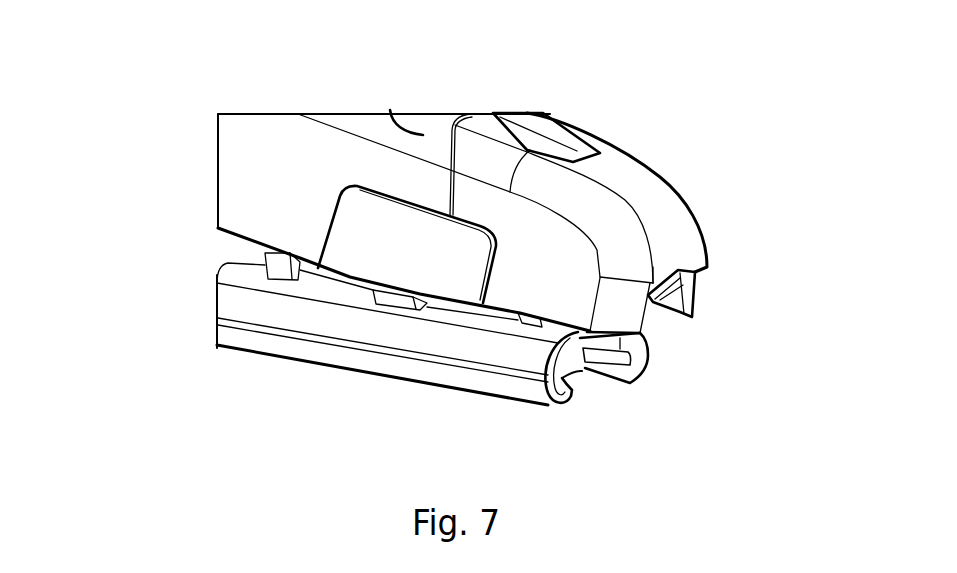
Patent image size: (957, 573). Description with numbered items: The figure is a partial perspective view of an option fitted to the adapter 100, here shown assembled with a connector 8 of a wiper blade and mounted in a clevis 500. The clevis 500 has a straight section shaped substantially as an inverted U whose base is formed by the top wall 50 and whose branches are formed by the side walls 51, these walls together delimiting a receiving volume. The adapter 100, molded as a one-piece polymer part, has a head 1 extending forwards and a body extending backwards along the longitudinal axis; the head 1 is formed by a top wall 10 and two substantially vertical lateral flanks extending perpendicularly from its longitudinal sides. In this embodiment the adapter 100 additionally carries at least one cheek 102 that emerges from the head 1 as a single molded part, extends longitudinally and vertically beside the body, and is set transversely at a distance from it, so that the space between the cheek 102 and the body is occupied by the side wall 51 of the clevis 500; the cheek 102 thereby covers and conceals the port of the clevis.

The head 1 is at (544, 205).
The connector 8 is at (282, 318).
The top wall 10 is at (683, 232).
The top wall 50 is at (393, 115).
The side wall 51 is at (287, 218).
The adapter 100 is at (705, 181).
The cheek 102 is at (367, 257).
The clevis 500 is at (200, 173).